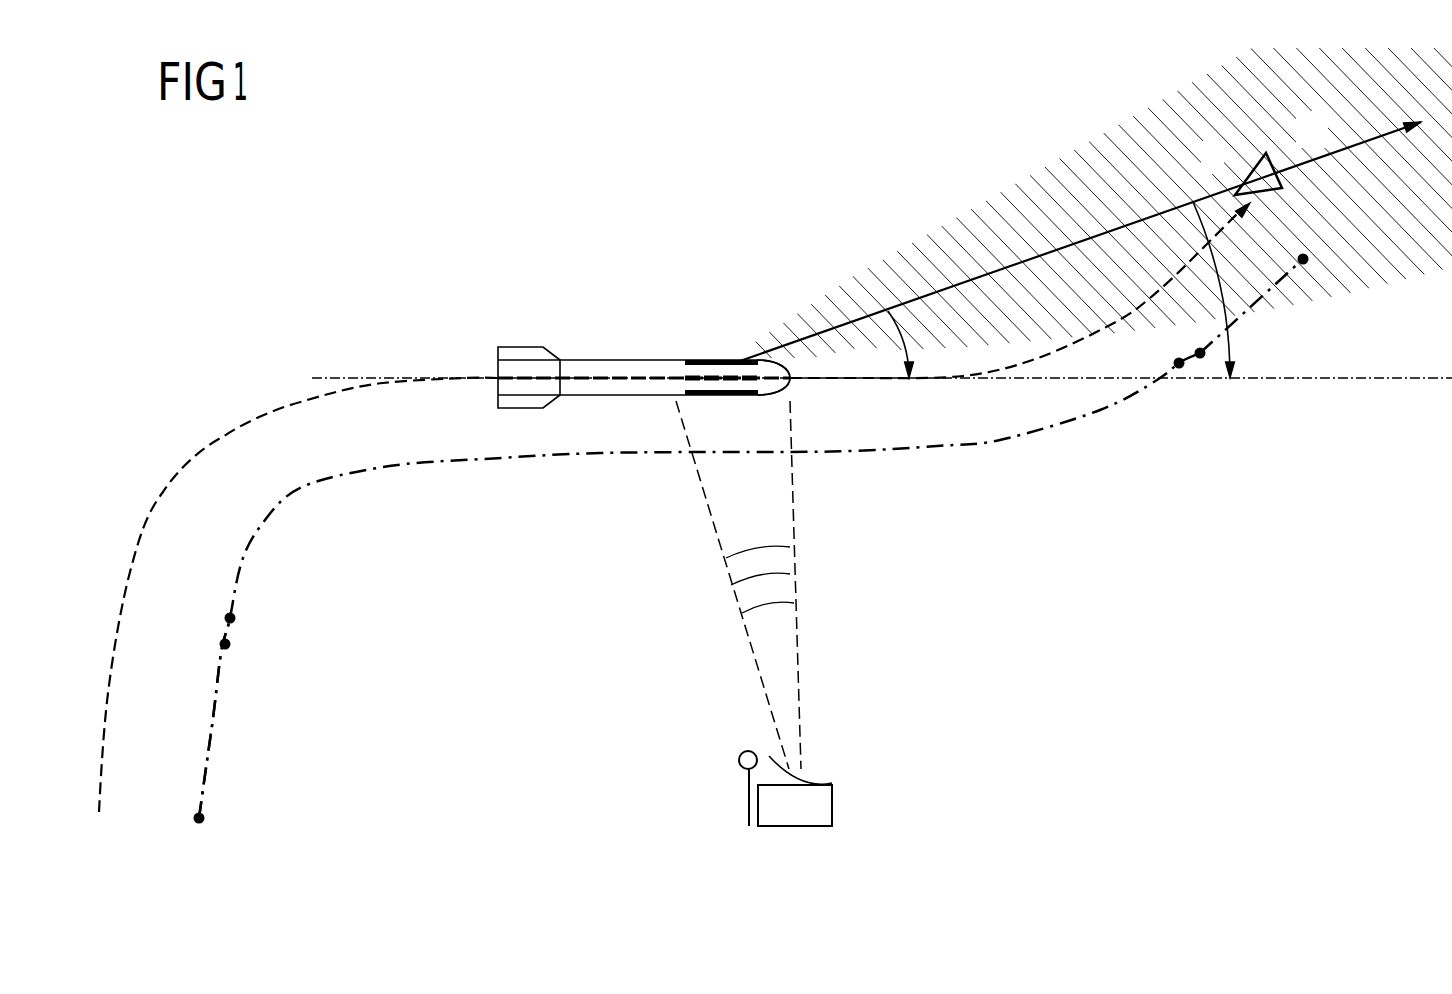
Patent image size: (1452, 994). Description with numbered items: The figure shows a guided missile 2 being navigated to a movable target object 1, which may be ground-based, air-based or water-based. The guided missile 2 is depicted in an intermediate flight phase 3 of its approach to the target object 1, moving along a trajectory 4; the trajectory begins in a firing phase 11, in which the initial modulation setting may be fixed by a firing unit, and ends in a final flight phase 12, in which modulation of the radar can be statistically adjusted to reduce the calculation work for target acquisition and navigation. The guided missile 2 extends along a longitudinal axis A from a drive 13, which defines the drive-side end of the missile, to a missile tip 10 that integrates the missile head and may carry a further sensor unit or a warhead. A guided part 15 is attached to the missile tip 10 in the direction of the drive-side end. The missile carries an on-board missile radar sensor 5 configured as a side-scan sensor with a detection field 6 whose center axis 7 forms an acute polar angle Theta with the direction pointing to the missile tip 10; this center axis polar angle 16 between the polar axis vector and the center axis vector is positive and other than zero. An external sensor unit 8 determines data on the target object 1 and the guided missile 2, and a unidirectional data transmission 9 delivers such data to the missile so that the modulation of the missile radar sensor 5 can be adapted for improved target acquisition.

The target object 1 is at (1259, 181).
The guided missile 2 is at (622, 358).
The intermediate flight phase 3 is at (937, 445).
The trajectory 4 is at (231, 431).
The missile radar sensor 5 is at (720, 360).
The guided part 15 is at (721, 377).
The detection field 6 is at (1051, 186).
The center axis 7 is at (1341, 145).
The external sensor unit 8 is at (834, 803).
The unidirectional data transmission 9 is at (754, 568).
The missile tip 10 is at (789, 381).
The firing phase 11 is at (212, 727).
The final flight phase 12 is at (1272, 295).
The drive 13 is at (525, 353).
The center axis polar angle 16 is at (905, 340).
The longitudinal axis A is at (370, 378).
The polar angle theta Theta is at (1233, 343).